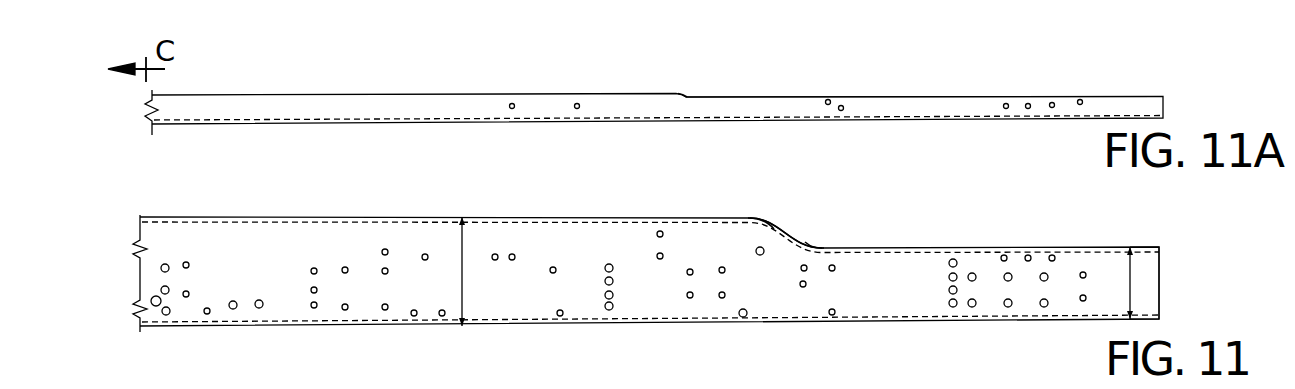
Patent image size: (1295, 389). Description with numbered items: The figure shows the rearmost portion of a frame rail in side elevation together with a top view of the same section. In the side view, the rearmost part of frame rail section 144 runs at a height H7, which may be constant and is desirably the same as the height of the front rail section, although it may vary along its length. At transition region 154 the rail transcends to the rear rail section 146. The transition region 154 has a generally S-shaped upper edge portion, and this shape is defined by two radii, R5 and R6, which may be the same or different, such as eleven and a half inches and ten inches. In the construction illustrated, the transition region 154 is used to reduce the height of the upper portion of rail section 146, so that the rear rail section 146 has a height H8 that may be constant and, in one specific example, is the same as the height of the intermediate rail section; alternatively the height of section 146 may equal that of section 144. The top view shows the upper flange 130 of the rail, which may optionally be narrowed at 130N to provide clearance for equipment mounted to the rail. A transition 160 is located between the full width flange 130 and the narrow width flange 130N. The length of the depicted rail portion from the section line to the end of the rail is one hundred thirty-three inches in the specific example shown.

In FIG. 11A, the flange 130 is at (598, 103).
In FIG. 11A, the transition 160 is at (687, 91).
In FIG. 11A, the narrow width flange 130N is at (782, 105).
In FIG. 11, the frame rail section 144 is at (580, 247).
In FIG. 11, the transition region 154 is at (787, 216).
In FIG. 11, the radius R6 is at (824, 246).
In FIG. 11, the radius R5 is at (758, 225).
In FIG. 11, the rear rail section 146 is at (1098, 265).
In FIG. 11, the height H7 is at (462, 283).
In FIG. 11, the height H8 is at (1130, 278).